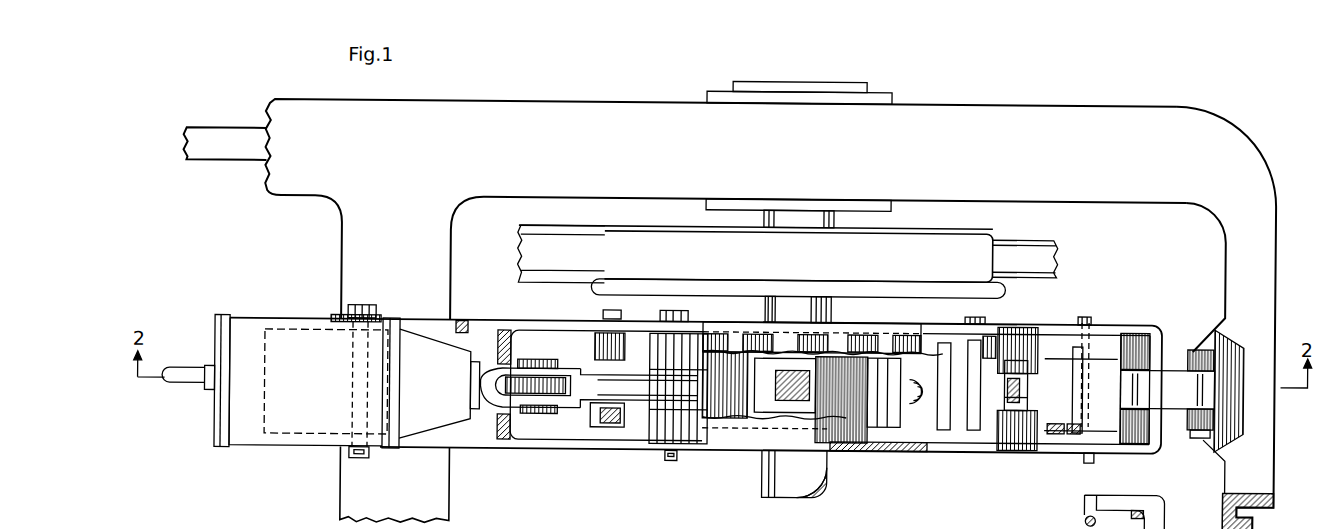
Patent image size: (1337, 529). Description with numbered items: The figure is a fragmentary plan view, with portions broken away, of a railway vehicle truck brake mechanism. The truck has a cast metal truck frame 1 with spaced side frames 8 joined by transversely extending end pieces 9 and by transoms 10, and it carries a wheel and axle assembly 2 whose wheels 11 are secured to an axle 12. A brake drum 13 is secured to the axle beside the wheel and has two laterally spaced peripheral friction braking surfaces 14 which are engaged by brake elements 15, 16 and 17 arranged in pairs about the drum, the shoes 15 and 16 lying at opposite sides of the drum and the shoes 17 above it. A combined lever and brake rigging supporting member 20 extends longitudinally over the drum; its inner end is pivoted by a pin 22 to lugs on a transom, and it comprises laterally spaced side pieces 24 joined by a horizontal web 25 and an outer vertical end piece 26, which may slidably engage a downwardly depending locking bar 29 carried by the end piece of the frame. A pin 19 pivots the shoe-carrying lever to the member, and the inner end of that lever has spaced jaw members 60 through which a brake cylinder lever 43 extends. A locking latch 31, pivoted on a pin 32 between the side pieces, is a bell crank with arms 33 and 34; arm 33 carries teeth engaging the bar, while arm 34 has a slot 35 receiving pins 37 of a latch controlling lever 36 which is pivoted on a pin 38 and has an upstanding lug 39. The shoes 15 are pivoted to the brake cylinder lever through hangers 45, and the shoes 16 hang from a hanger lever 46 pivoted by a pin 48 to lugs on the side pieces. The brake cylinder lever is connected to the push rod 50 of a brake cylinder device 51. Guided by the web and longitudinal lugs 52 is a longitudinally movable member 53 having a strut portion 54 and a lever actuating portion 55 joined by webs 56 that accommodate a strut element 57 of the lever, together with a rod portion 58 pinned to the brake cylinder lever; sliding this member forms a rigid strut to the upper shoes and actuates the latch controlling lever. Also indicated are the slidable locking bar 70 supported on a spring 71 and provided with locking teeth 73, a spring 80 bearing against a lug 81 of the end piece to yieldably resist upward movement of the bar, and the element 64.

The truck frame 1 is at (984, 99).
The wheel and axle assembly 2 is at (962, 234).
The side frame 8 is at (631, 99).
The end piece 9 is at (1272, 281).
The transom 10 is at (347, 483).
The wheel 11 is at (915, 236).
The axle 12 is at (765, 479).
The brake drum 13 is at (940, 327).
The peripheral friction braking surface 14 is at (960, 321).
The brake element 15 is at (640, 334).
The brake element 16 is at (995, 327).
The brake element 17 is at (873, 338).
The pin 19 is at (672, 459).
The combined lever and brake rigging supporting member 20 is at (470, 321).
The pin 22 is at (372, 306).
The side piece 24 is at (564, 320).
The web 25 is at (743, 333).
The end piece 26 is at (1157, 347).
The locking bar 29 is at (1168, 402).
The locking latch 31 is at (1085, 326).
The pin 32 is at (1100, 286).
The arm 33 is at (1107, 326).
The arm 34 is at (1077, 423).
The slot 35 is at (1053, 427).
The latch controlling lever 36 is at (993, 441).
The pin 37 is at (1073, 426).
The pin 38 is at (973, 311).
The lug 39 is at (897, 435).
The brake cylinder lever 43 is at (503, 445).
The hanger 45 is at (597, 350).
The hanger lever 46 is at (1017, 434).
The pin 48 is at (1022, 394).
The push rod 50 is at (505, 341).
The brake cylinder device 51 is at (253, 327).
The lug 52 is at (852, 340).
The longitudinally movable member 53 is at (847, 442).
The strut portion 54 is at (710, 339).
The lever actuating portion 55 is at (838, 338).
The web 56 is at (773, 339).
The strut element 57 is at (800, 381).
The rod portion 58 is at (627, 437).
The jaw member 60 is at (590, 369).
The bracket 64 is at (258, 524).
The locking bar 70 is at (311, 524).
The spring 71 is at (458, 525).
The locking teeth 73 is at (487, 513).
The spring 80 is at (1168, 519).
The lug 81 is at (1127, 495).